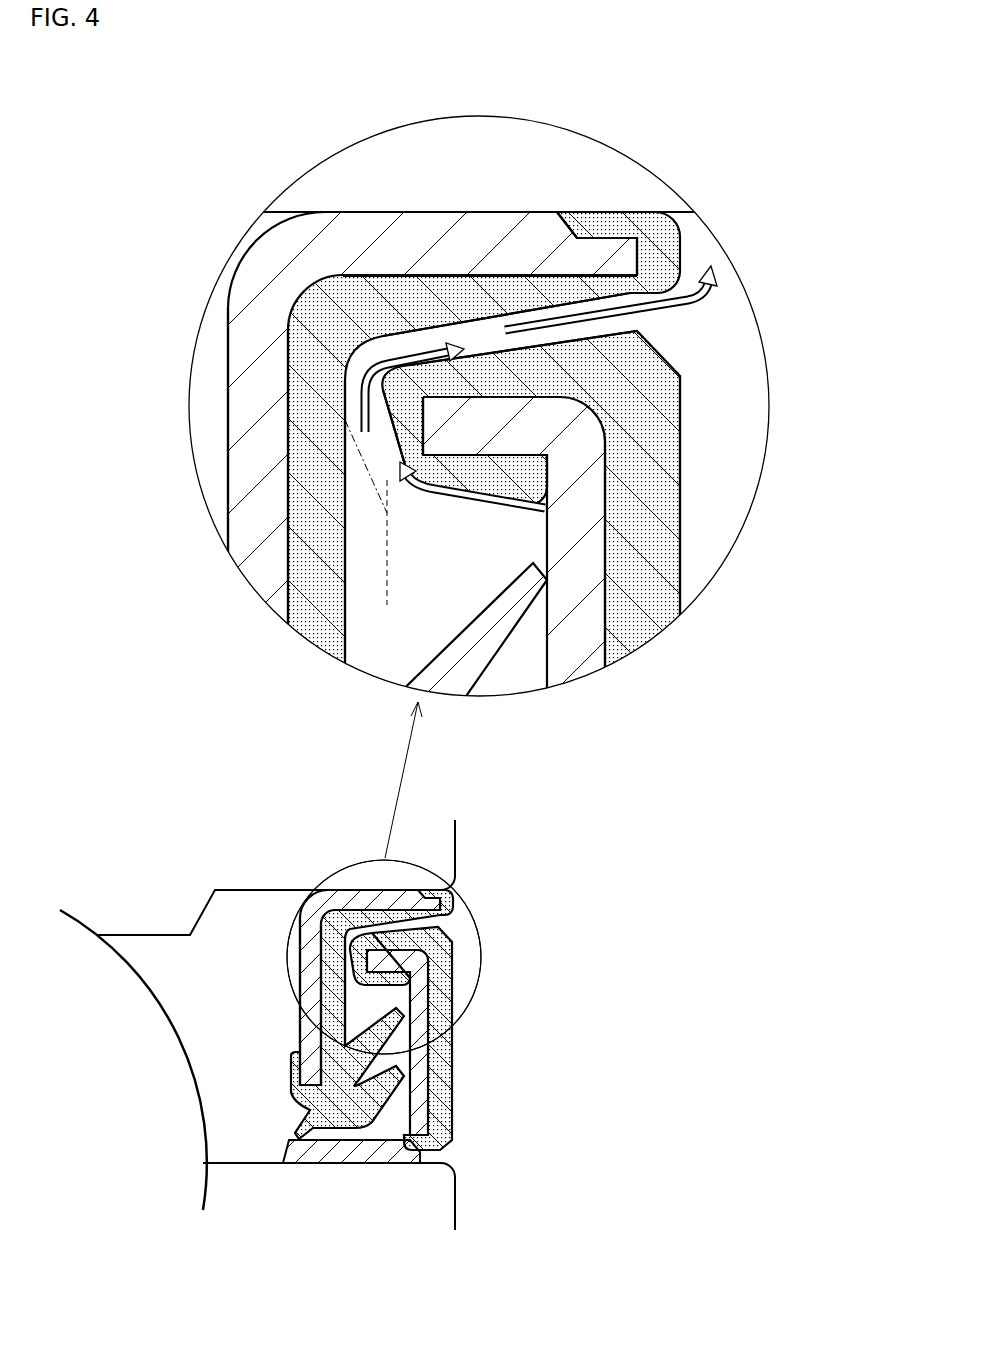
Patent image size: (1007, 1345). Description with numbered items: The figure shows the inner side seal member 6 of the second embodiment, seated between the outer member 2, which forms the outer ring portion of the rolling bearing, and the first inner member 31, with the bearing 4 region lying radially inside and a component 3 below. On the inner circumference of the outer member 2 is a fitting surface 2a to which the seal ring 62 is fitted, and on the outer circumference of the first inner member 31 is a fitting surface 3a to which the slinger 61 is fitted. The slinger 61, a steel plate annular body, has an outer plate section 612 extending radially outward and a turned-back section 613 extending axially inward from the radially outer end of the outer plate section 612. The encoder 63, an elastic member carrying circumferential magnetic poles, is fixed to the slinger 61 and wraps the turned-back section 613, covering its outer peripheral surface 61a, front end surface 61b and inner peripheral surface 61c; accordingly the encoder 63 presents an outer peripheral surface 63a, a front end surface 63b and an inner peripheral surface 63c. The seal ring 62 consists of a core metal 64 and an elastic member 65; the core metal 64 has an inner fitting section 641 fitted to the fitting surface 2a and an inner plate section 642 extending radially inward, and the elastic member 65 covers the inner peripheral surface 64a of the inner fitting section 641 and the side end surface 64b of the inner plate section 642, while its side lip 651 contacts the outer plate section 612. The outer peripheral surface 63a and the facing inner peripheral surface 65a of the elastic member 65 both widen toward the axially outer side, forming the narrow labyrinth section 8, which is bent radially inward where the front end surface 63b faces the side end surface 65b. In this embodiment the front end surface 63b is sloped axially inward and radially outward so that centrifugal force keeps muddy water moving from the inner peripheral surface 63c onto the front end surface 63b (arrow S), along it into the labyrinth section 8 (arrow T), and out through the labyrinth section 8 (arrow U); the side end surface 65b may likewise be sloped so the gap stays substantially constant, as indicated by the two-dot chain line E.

The outer member 2 is at (159, 868).
The fitting surface 2a is at (258, 890).
The inner member (shaft) 3 is at (503, 1196).
The fitting surface 3a is at (245, 1165).
The first inner member 31 is at (337, 1223).
The bearing 4 is at (141, 1073).
The inner side seal member 6 is at (510, 1001).
The slinger 61 is at (450, 1052).
The outer plate section 612 is at (603, 563).
The turned-back section 613 is at (612, 285).
The outer peripheral surface 61a is at (680, 452).
The front end surface 61b is at (410, 490).
The inner peripheral surface 61c is at (493, 512).
The seal ring 62 is at (220, 942).
The encoder 63 is at (675, 517).
The outer peripheral surface 63a is at (600, 362).
The front end surface 63b is at (368, 508).
The inner peripheral surface 63c is at (457, 500).
The core metal 64 is at (297, 956).
The inner fitting section 641 is at (377, 212).
The inner plate section 642 is at (228, 396).
The inner peripheral surface 64a is at (445, 283).
The side end surface 64b is at (290, 450).
The elastic member 65 is at (295, 322).
The inner peripheral surface 65a is at (520, 335).
The side end surface 65b is at (347, 520).
The side lip 651 is at (503, 640).
The labyrinth section 8 is at (664, 333).
The arrow S is at (467, 494).
The arrow T is at (421, 373).
The arrow U is at (621, 298).
The two-dot chain line E is at (389, 597).